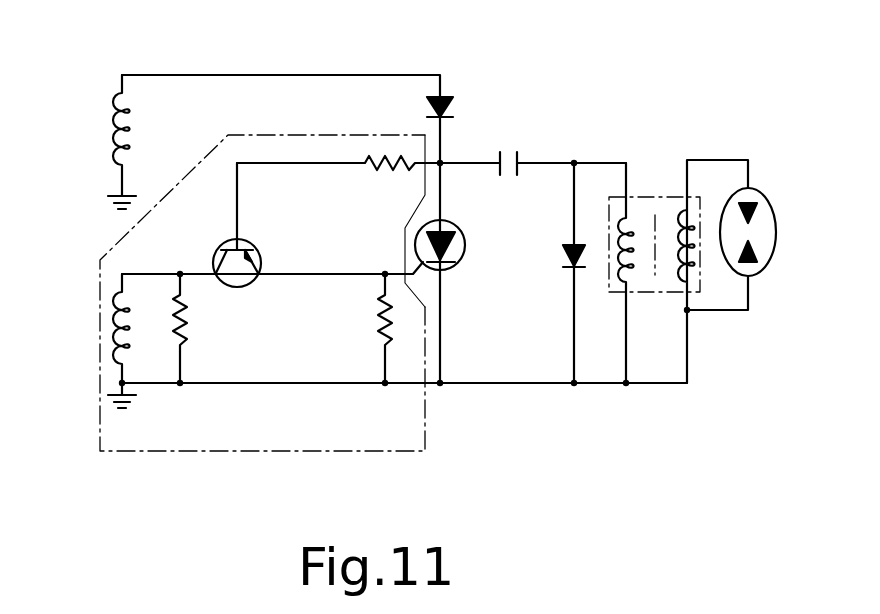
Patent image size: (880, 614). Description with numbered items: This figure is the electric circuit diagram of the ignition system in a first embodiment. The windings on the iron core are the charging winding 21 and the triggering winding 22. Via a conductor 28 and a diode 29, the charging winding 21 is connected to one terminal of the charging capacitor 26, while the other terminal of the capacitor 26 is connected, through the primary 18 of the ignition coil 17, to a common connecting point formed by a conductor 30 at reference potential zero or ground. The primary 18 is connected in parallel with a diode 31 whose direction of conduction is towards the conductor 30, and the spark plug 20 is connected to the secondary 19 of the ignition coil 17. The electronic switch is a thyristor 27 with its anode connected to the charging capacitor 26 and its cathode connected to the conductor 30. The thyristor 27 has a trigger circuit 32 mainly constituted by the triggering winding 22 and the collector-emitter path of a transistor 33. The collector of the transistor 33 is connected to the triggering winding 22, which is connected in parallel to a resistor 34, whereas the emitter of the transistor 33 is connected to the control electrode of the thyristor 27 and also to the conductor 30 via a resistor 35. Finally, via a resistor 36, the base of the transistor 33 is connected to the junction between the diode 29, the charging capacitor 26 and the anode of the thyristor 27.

The ignition coil 17 is at (645, 198).
The primary 18 is at (620, 222).
The secondary 19 is at (690, 215).
The spark plug 20 is at (775, 205).
The charging winding 21 is at (112, 122).
The triggering winding 22 is at (113, 330).
The charging capacitor 26 is at (517, 160).
The thyristor 27 is at (458, 226).
The conductor 28 is at (288, 76).
The diode 29 is at (452, 97).
The conductor 30 is at (422, 386).
The diode 31 is at (566, 254).
The trigger circuit 32 is at (303, 452).
The transistor 33 is at (257, 247).
The resistor 34 is at (185, 322).
The resistor 35 is at (378, 325).
The resistor 36 is at (392, 170).